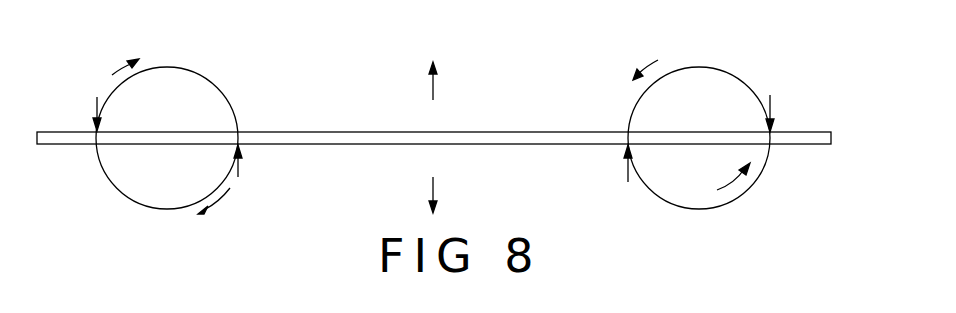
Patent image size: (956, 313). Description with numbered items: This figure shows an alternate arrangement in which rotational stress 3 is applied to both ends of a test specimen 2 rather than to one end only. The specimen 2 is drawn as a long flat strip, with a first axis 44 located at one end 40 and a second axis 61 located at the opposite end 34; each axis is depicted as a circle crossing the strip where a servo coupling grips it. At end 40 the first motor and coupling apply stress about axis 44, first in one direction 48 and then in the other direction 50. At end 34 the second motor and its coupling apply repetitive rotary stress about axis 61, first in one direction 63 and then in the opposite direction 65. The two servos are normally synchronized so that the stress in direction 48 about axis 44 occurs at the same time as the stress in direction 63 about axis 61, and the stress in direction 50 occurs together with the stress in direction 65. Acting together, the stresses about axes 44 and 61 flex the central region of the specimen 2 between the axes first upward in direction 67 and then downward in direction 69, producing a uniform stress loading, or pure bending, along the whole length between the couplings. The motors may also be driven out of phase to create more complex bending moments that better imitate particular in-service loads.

The test specimen 2 is at (328, 132).
The rotational stress 3 is at (723, 72).
The end of test specimen 34 is at (58, 138).
The end of test specimen 40 is at (816, 144).
The axis 44 is at (697, 137).
The direction 48 is at (770, 105).
The direction 50 is at (650, 58).
The axis 61 is at (166, 137).
The direction 63 is at (97, 107).
The direction 65 is at (113, 74).
The upward direction 67 is at (433, 92).
The downward direction 69 is at (433, 187).